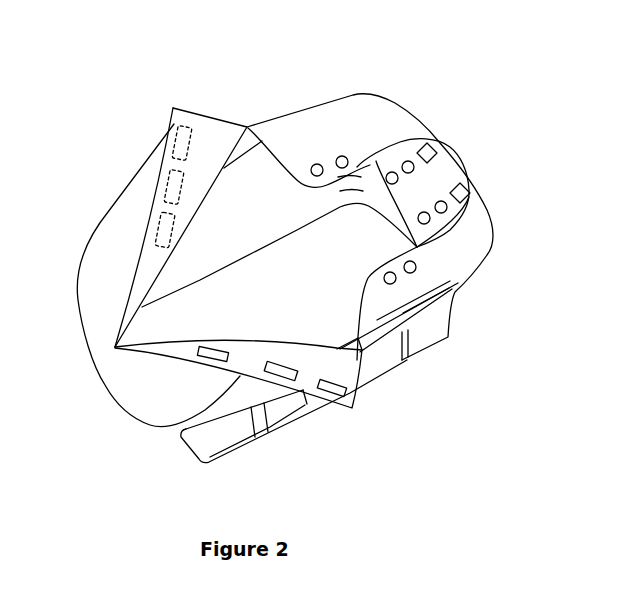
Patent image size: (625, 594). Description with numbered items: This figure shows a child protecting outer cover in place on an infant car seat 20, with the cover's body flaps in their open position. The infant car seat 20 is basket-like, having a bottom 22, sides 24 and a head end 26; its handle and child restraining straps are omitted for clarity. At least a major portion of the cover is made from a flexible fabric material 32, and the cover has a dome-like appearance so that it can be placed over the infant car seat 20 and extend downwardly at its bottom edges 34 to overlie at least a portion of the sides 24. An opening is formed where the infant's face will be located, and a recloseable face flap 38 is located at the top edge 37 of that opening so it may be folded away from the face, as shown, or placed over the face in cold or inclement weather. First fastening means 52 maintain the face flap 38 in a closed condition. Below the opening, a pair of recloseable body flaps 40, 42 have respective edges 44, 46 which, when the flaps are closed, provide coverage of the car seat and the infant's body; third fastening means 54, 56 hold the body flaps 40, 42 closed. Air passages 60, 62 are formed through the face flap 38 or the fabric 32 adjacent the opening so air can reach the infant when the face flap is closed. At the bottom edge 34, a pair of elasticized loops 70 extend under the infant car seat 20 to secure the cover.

The infant car seat 20 is at (440, 322).
The bottom 22 is at (302, 310).
The sides 24 is at (265, 222).
The head end 26 is at (402, 218).
The flexible fabric material 32 is at (117, 224).
The bottom edges 34 is at (303, 392).
The top edge 37 is at (378, 164).
The recloseable face flap 38 is at (450, 166).
The recloseable body flap 40 is at (217, 127).
The recloseable body flap 42 is at (353, 382).
The edge 44 is at (175, 128).
The edge 46 is at (192, 398).
The first fastening means 52 is at (434, 147).
The third fastening means 54 is at (168, 178).
The third fastening means 56 is at (200, 362).
The air passage 60 is at (447, 207).
The air passage 62 is at (417, 267).
The elasticized loops 70 is at (407, 347).